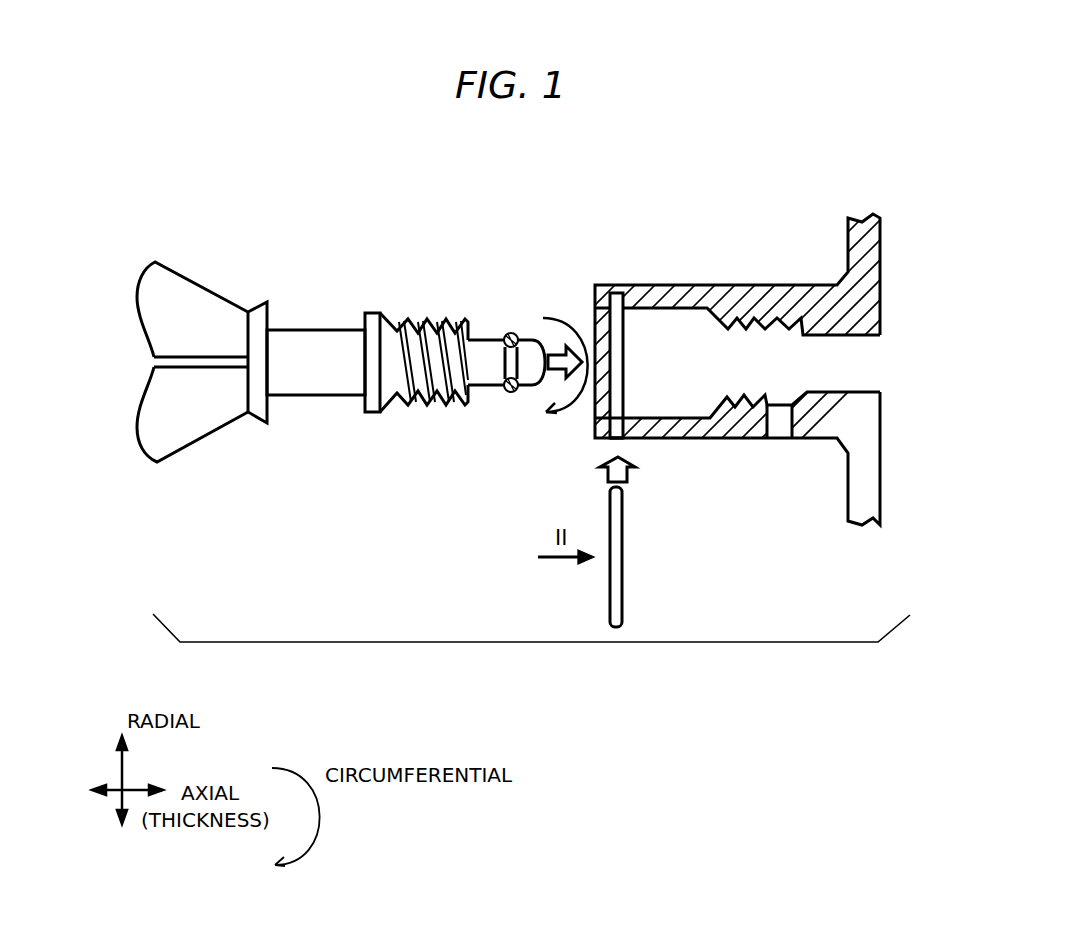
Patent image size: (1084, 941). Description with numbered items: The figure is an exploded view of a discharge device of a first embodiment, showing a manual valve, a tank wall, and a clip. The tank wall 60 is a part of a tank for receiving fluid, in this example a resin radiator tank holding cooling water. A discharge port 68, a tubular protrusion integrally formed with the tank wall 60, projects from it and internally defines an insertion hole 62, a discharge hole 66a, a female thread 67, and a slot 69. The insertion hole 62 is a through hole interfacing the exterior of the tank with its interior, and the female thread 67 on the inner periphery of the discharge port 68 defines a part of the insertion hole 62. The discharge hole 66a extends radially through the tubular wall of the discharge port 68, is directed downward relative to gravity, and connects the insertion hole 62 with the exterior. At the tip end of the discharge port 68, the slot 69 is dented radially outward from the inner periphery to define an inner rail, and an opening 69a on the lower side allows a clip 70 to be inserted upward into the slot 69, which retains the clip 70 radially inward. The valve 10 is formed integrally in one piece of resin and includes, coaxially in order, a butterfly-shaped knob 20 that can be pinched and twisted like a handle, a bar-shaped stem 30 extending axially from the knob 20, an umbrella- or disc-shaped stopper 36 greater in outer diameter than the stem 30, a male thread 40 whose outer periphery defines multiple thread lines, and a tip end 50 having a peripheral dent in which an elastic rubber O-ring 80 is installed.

The valve 10 is at (323, 267).
The knob 20 is at (223, 403).
The stem 30 is at (283, 398).
The stopper 36 is at (370, 414).
The male thread 40 is at (426, 410).
The tip end 50 is at (522, 388).
The O-ring 80 is at (508, 330).
The tank wall 60 is at (858, 205).
The insertion hole 62 is at (677, 373).
The female thread 67 is at (727, 328).
The discharge port 68 is at (772, 275).
The slot 69 is at (618, 398).
The opening 69a is at (612, 436).
The discharge hole 66a is at (785, 455).
The clip 70 is at (585, 590).